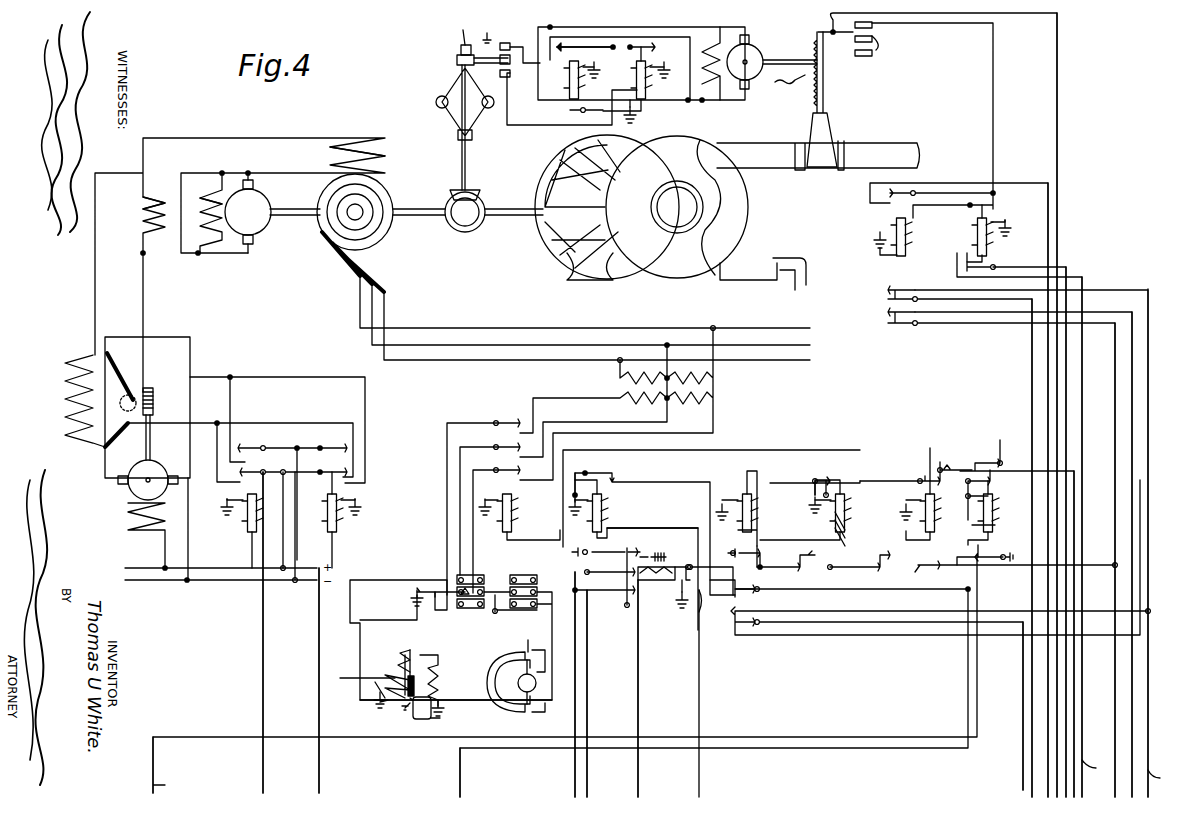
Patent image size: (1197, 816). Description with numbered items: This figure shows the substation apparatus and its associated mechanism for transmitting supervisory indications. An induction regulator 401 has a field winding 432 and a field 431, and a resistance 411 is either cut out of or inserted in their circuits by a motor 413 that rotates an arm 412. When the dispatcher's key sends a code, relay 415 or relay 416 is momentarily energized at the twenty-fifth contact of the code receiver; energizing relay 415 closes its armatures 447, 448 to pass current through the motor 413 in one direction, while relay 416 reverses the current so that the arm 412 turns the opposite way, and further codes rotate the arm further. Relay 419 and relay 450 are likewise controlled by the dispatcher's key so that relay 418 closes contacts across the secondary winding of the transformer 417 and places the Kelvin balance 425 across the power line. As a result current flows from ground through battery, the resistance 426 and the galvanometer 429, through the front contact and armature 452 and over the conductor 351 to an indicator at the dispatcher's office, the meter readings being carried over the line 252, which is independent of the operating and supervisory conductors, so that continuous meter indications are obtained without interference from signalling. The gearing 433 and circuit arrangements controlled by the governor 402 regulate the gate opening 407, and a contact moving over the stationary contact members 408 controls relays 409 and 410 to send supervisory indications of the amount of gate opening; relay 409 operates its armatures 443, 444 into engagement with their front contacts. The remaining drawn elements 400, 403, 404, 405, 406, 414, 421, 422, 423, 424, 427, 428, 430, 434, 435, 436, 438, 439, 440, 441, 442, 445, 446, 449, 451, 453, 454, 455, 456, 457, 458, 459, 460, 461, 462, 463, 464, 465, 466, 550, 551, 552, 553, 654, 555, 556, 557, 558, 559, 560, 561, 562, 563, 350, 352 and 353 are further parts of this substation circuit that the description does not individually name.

The motor 400 is at (255, 205).
The induction regulator 401 is at (385, 196).
The governor 402 is at (446, 97).
The blower 403 is at (575, 152).
The relay 404 is at (590, 63).
The relay 405 is at (655, 100).
The motor 406 is at (755, 60).
The gate opening 407 is at (828, 125).
The stationary contact members 408 is at (937, 405).
The relay 409 is at (893, 228).
The relay 410 is at (978, 236).
The resistance 411 is at (68, 384).
The arm 412 is at (132, 385).
The motor 413 is at (135, 487).
The coil 414 is at (164, 424).
The relay 415 is at (235, 531).
The relay 416 is at (354, 520).
The transformer 417 is at (620, 389).
The relay 418 is at (519, 517).
The relay 419 is at (608, 505).
The relay 421 is at (740, 498).
The relay 422 is at (828, 524).
The relay 423 is at (922, 509).
The relay 424 is at (996, 516).
The Kelvin balance 425 is at (492, 590).
The resistance 426 is at (420, 665).
The magnet 427 is at (402, 704).
The resistance 428 is at (442, 668).
The galvanometer 429 is at (530, 660).
The resistance 430 is at (147, 222).
The field 431 is at (205, 215).
The field winding 432 is at (370, 132).
The gearing 433 is at (482, 198).
The contact 434 is at (466, 44).
The contact 435 is at (494, 50).
The contact 436 is at (568, 86).
The contact 438 is at (578, 110).
The contact 439 is at (645, 45).
The ground 440 is at (646, 116).
The connection 441 is at (791, 87).
The contact 442 is at (900, 196).
The armature 443 is at (1017, 532).
The armature 444 is at (900, 326).
The contact 445 is at (985, 208).
The contact 446 is at (990, 270).
The armature 447 is at (278, 494).
The armature 448 is at (280, 622).
The contact 449 is at (328, 440).
The relay 450 is at (686, 564).
The contact 451 is at (582, 549).
The armature 452 is at (630, 590).
The conductor 453 is at (630, 545).
The contact 454 is at (608, 474).
The contact 455 is at (683, 598).
The contact 456 is at (736, 553).
The contact 457 is at (745, 596).
The contact 458 is at (745, 620).
The contact 459 is at (836, 478).
The contact 460 is at (826, 567).
The contact 461 is at (930, 460).
The contact 462 is at (932, 555).
The contact 463 is at (920, 585).
The contact 464 is at (990, 460).
The contact 465 is at (992, 490).
The contact 466 is at (985, 555).
The conductor 550 is at (171, 765).
The conductor 551 is at (460, 768).
The conductor 552 is at (1023, 734).
The conductor 553 is at (1032, 747).
The conductor 654 is at (1048, 762).
The conductor 555 is at (1057, 776).
The conductor 556 is at (1066, 720).
The conductor 557 is at (1074, 732).
The conductor 558 is at (1082, 746).
The conductor 559 is at (1099, 760).
The conductor 560 is at (1115, 718).
The conductor 561 is at (1132, 694).
The conductor 562 is at (1165, 732).
The conductor 563 is at (1164, 765).
The line 252 is at (575, 768).
The conductor 350 is at (651, 780).
The conductor 351 is at (600, 780).
The conductor 352 is at (262, 768).
The conductor 353 is at (319, 768).